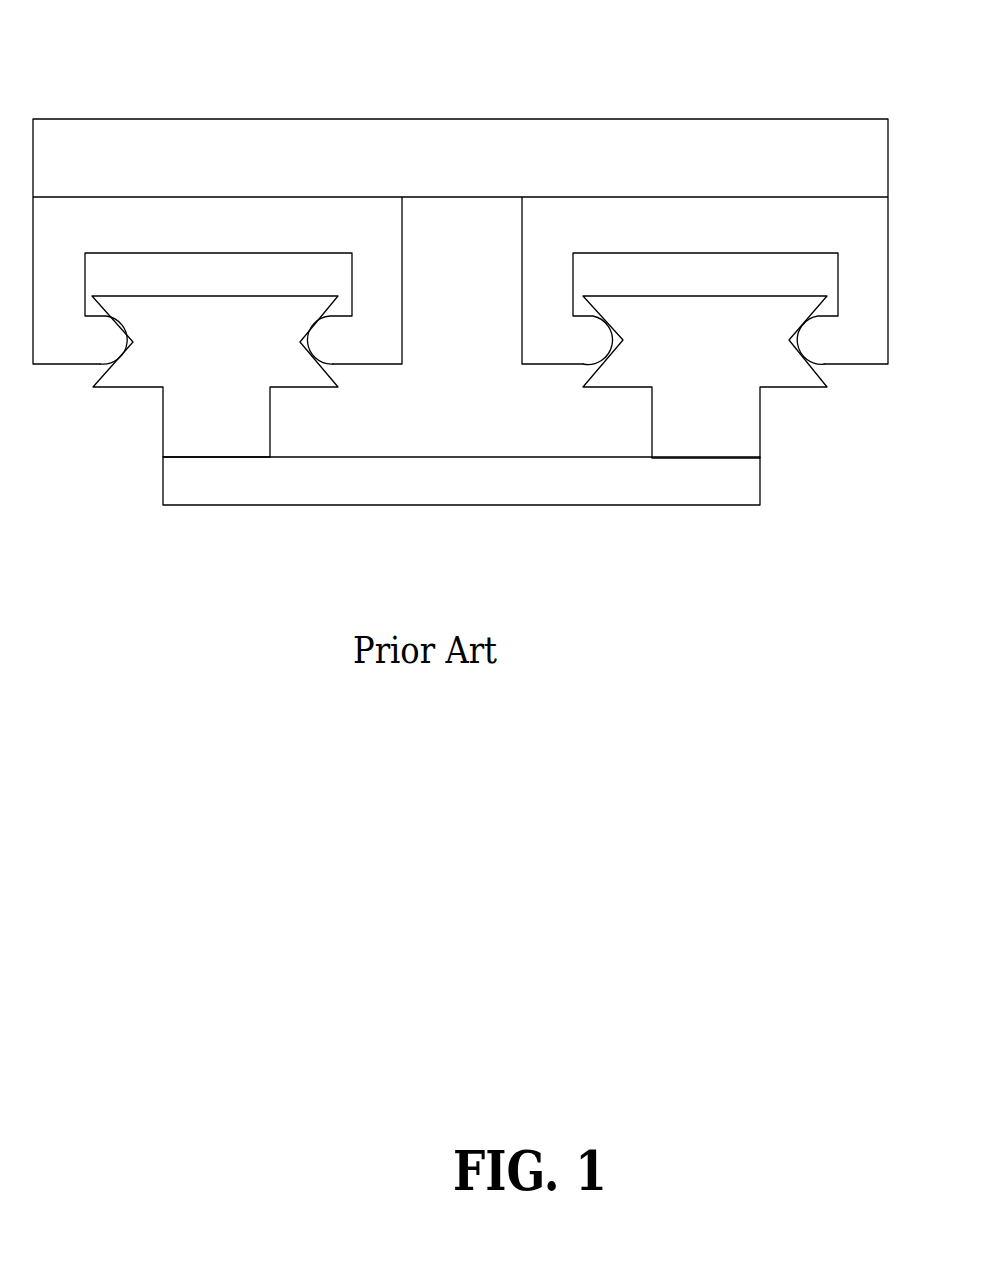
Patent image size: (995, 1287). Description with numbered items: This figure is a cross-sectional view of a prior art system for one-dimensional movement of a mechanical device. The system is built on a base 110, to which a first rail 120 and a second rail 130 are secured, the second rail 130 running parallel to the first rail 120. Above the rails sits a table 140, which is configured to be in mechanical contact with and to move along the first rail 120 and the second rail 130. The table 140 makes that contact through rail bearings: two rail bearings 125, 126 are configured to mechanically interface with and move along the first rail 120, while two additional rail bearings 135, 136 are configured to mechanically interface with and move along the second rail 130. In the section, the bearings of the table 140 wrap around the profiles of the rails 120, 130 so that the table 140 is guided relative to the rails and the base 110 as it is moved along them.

The base 110 is at (230, 483).
The first rail 120 is at (160, 355).
The rail bearing 125 is at (62, 345).
The rail bearing 126 is at (376, 338).
The second rail 130 is at (777, 358).
The rail bearing 135 is at (873, 337).
The rail bearing 136 is at (583, 345).
The table 140 is at (172, 128).